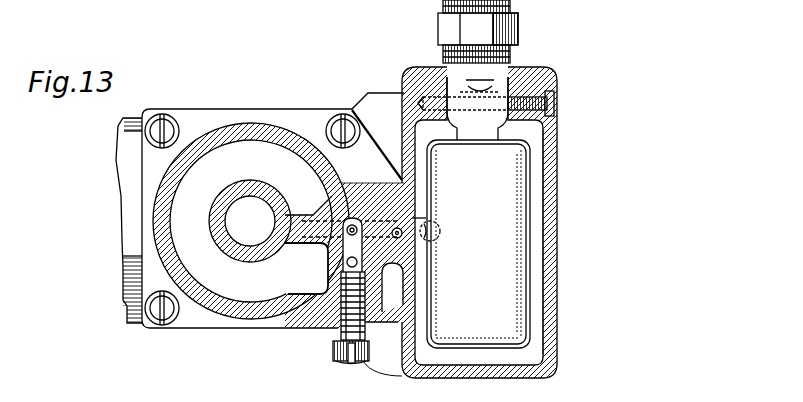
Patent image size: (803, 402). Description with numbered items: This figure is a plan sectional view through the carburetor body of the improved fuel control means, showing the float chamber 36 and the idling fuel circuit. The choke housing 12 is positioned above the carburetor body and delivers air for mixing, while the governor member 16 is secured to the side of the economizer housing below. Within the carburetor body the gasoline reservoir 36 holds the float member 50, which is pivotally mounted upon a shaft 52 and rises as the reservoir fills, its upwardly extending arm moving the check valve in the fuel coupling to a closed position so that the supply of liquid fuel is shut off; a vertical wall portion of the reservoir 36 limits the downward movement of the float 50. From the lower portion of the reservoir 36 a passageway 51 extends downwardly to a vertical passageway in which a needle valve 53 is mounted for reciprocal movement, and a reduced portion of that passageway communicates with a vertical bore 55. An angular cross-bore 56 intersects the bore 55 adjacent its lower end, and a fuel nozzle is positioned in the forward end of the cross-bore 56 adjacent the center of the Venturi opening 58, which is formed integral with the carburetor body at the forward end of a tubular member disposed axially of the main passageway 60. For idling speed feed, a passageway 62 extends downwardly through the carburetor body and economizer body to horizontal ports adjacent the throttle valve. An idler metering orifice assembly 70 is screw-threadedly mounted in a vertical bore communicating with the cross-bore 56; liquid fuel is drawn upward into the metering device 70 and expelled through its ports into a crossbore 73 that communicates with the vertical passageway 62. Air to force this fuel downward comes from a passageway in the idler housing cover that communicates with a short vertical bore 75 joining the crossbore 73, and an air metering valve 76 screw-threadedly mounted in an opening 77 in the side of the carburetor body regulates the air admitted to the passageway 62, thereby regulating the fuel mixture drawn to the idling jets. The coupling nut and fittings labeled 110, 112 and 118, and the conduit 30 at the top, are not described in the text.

The choke housing 12 is at (548, 315).
The governor member 16 is at (128, 172).
The conduit 30 is at (511, 6).
The float chamber 36 is at (536, 200).
The float member 50 is at (515, 230).
The passageway 51 is at (442, 232).
The shaft 52 is at (554, 98).
The needle valve 53 is at (416, 219).
The vertical bore 55 is at (395, 229).
The angular cross-bore 56 is at (307, 240).
The Venturi opening 58 is at (236, 208).
The passageway 60 is at (225, 291).
The passageway 62 is at (357, 263).
The idler metering orifice assembly 70 is at (340, 226).
The crossbore 73 is at (353, 245).
The short vertical bore 75 is at (336, 300).
The air metering valve 76 is at (352, 363).
The opening 77 is at (337, 342).
The nut 110 is at (509, 32).
The threaded fitting 112 is at (520, 72).
The fitting 118 is at (477, 88).